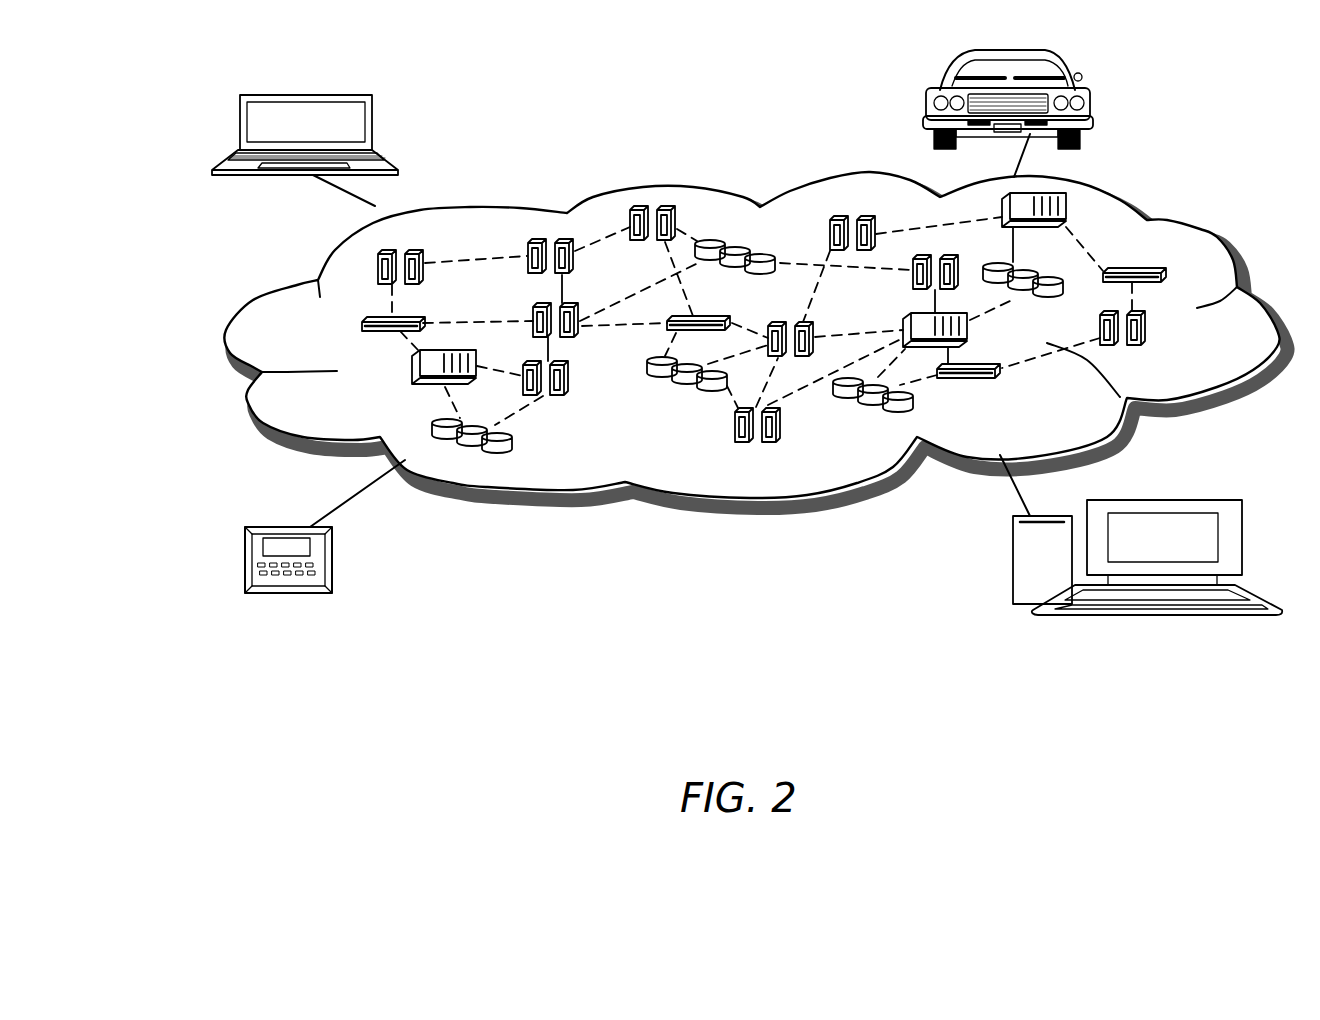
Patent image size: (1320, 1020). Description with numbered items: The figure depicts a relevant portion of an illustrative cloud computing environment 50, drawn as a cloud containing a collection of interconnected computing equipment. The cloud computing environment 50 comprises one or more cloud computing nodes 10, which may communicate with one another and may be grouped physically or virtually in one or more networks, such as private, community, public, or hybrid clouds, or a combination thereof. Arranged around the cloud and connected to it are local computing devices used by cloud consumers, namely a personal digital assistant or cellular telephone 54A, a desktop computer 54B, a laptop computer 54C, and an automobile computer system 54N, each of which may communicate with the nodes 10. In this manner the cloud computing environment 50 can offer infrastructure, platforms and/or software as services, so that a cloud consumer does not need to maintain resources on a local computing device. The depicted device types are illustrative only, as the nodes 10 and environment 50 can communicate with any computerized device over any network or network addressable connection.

The cloud computing nodes 10 is at (285, 405).
The cloud computing environment 50 is at (722, 500).
The personal digital assistant (PDA) or cellular telephone 54A is at (243, 568).
The desktop computer 54B is at (1012, 554).
The laptop computer 54C is at (238, 107).
The automobile computer system 54N is at (928, 84).